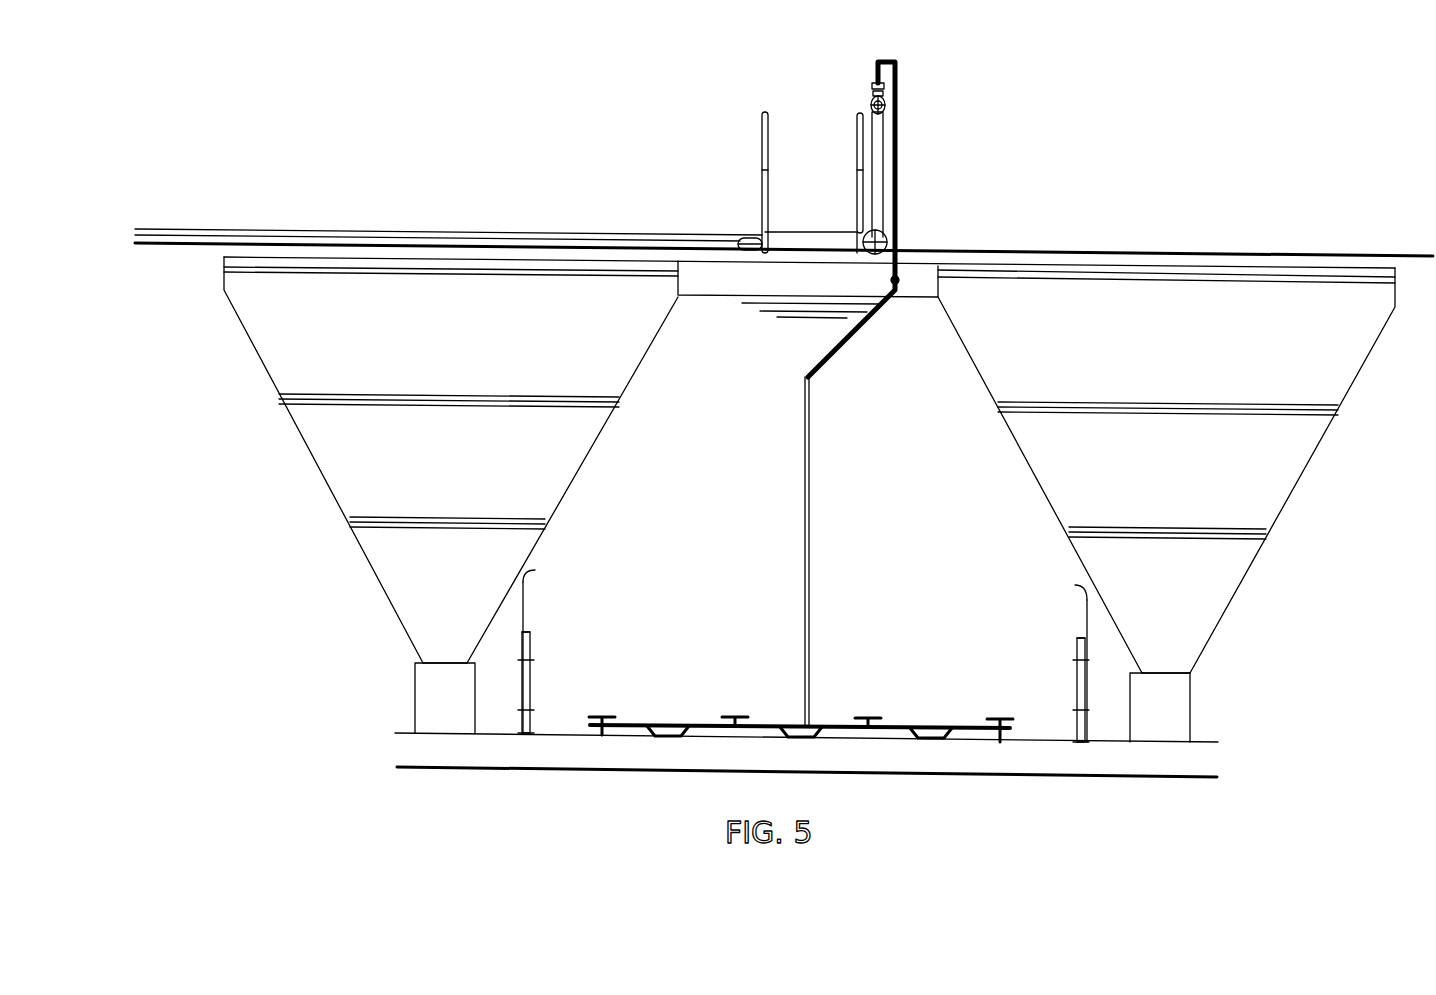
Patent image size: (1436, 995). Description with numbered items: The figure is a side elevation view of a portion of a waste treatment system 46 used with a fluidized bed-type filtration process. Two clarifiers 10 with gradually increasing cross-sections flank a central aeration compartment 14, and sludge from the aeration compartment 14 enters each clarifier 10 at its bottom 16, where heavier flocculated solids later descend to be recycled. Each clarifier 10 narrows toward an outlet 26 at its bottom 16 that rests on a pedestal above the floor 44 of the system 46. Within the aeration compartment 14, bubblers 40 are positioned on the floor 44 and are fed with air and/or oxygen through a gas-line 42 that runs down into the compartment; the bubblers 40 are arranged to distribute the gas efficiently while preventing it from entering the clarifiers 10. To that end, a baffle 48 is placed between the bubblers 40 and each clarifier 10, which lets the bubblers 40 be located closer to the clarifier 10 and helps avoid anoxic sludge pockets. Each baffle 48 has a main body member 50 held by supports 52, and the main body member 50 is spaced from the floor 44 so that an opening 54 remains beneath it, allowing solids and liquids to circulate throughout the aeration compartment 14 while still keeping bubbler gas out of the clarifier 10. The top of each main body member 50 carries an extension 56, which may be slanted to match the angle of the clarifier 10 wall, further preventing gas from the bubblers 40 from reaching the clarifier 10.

The clarifier 10 is at (287, 455).
The aeration compartment 14 is at (808, 374).
The bottom 16 is at (417, 651).
The hopper discharge outlet 26 is at (482, 633).
The bubblers 40 is at (720, 703).
The gas-line 42 is at (808, 550).
The floor 44 is at (557, 733).
The waste treatment system 46 is at (1058, 175).
The baffle 48 is at (532, 606).
The main body member 50 is at (523, 625).
The supports 52 is at (530, 662).
The opening 54 is at (548, 718).
The extension 56 is at (535, 570).